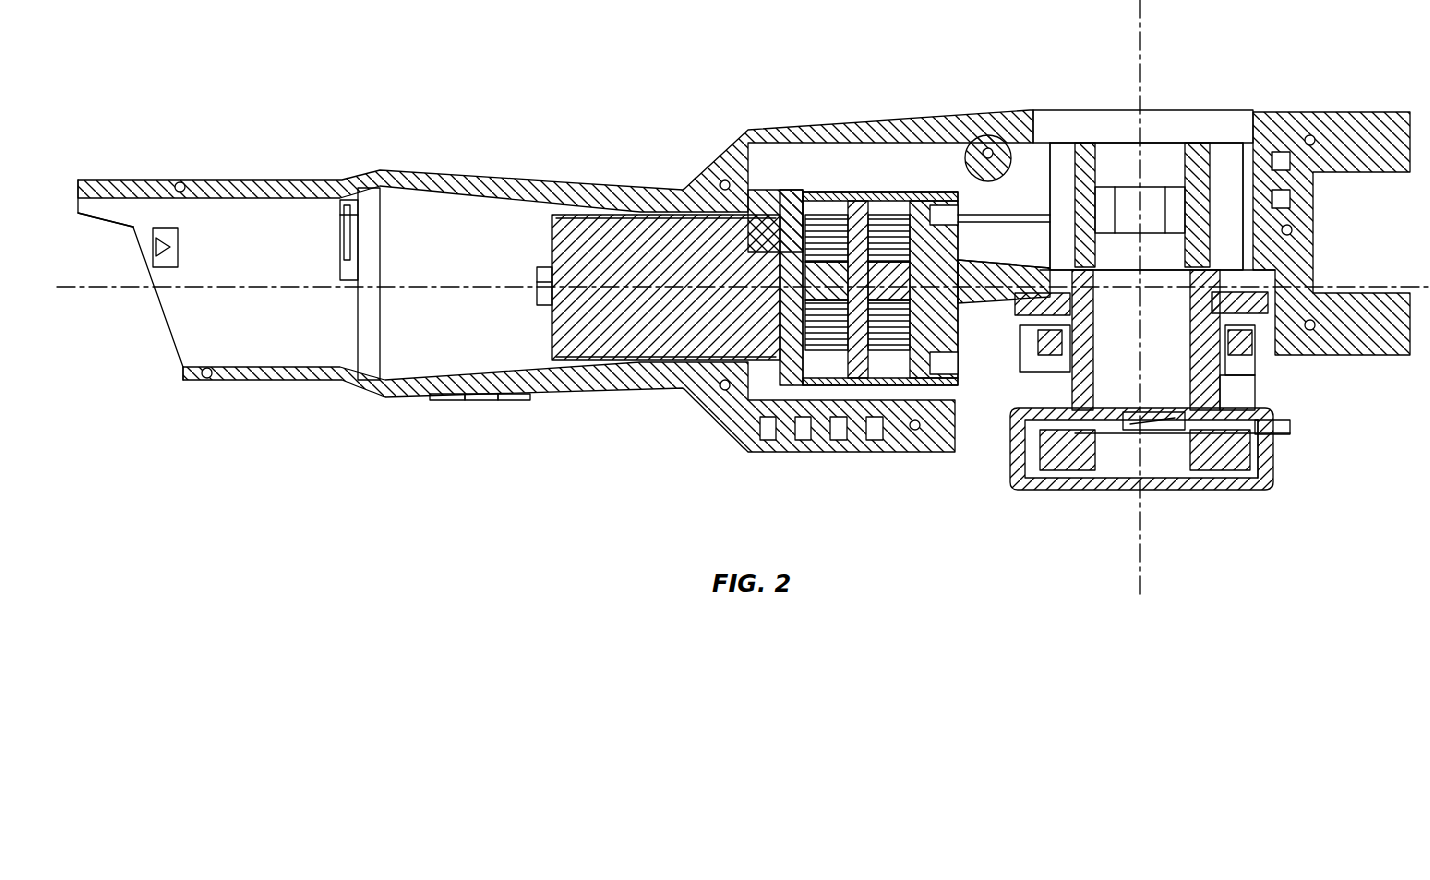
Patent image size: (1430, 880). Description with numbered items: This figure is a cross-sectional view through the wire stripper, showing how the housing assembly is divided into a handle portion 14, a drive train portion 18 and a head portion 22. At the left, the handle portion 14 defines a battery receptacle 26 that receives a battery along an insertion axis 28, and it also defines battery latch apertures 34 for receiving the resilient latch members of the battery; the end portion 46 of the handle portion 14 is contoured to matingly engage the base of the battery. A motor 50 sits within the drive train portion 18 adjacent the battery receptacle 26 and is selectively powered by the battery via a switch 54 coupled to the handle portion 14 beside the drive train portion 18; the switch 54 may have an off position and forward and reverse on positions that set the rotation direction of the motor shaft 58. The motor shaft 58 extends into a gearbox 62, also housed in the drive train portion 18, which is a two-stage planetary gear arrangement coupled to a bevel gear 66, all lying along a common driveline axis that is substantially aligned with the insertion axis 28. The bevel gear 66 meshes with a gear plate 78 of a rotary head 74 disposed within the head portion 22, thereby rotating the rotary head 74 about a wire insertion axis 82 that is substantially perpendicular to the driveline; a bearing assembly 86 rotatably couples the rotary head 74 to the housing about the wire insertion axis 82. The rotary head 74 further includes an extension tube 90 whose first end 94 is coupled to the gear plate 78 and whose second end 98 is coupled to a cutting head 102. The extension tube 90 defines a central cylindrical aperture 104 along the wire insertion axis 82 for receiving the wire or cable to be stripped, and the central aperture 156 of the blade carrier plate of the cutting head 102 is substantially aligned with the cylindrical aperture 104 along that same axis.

The handle portion 14 is at (240, 179).
The drive train portion 18 is at (820, 128).
The head portion 22 is at (1328, 114).
The battery receptacle 26 is at (222, 326).
The insertion axis 28 is at (101, 292).
The battery latch apertures 34 is at (165, 250).
The end portion 46 is at (160, 322).
The motor 50 is at (603, 330).
The switch 54 is at (476, 402).
The motor shaft 58 is at (800, 345).
The gearbox 62 is at (878, 195).
The bevel gear 66 is at (1012, 273).
The rotary head 74 is at (1328, 402).
The gear plate 78 is at (1245, 268).
The wire insertion axis 82 is at (1130, 540).
The bearing assembly 86 is at (1040, 332).
The extension tube 90 is at (1295, 430).
The first end 94 is at (1258, 402).
The second end 98 is at (1240, 472).
The cutting head 102 is at (1006, 492).
The cylindrical aperture 104 is at (1092, 402).
The central aperture 156 is at (1172, 432).